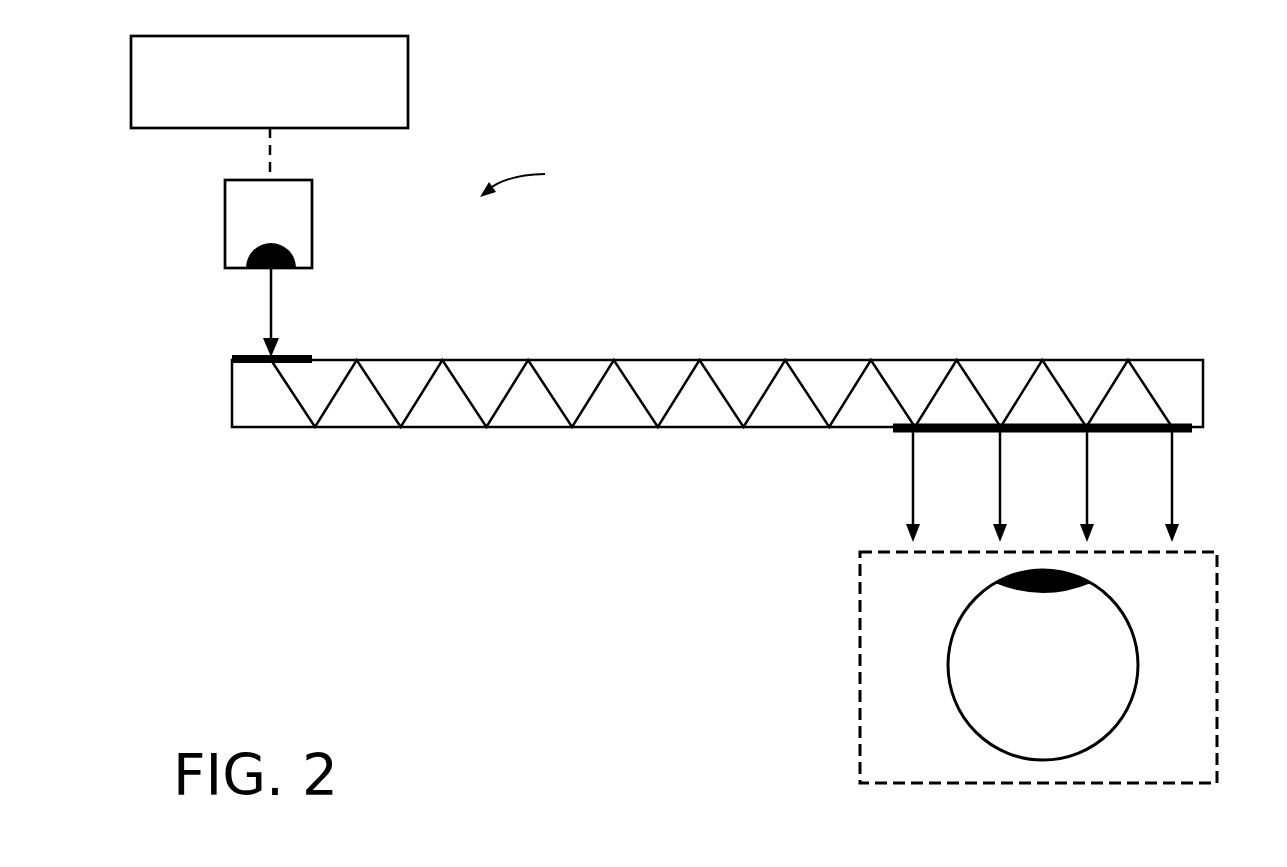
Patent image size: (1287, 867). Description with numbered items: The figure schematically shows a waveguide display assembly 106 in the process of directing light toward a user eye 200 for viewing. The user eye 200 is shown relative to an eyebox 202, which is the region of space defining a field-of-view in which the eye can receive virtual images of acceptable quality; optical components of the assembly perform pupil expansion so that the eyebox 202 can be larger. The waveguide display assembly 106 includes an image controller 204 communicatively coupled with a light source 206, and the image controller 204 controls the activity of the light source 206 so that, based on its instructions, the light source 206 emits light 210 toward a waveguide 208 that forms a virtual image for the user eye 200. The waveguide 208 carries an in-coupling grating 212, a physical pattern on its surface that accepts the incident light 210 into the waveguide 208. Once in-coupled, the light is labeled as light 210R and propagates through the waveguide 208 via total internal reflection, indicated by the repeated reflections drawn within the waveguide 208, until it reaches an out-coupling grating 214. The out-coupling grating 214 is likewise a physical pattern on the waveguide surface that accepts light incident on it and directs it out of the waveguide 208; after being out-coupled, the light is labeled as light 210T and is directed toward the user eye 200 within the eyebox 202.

The waveguide display assembly 106 is at (540, 181).
The user eye 200 is at (949, 647).
The eyebox 202 is at (1217, 574).
The image controller 204 is at (408, 80).
The light source 206 is at (313, 228).
The waveguide 208 is at (232, 398).
The light 210 is at (268, 321).
The in-coupled light 210R is at (327, 408).
The out-coupled light 210T is at (912, 478).
The in-coupling grating 212 is at (287, 355).
The out-coupling grating 214 is at (907, 437).